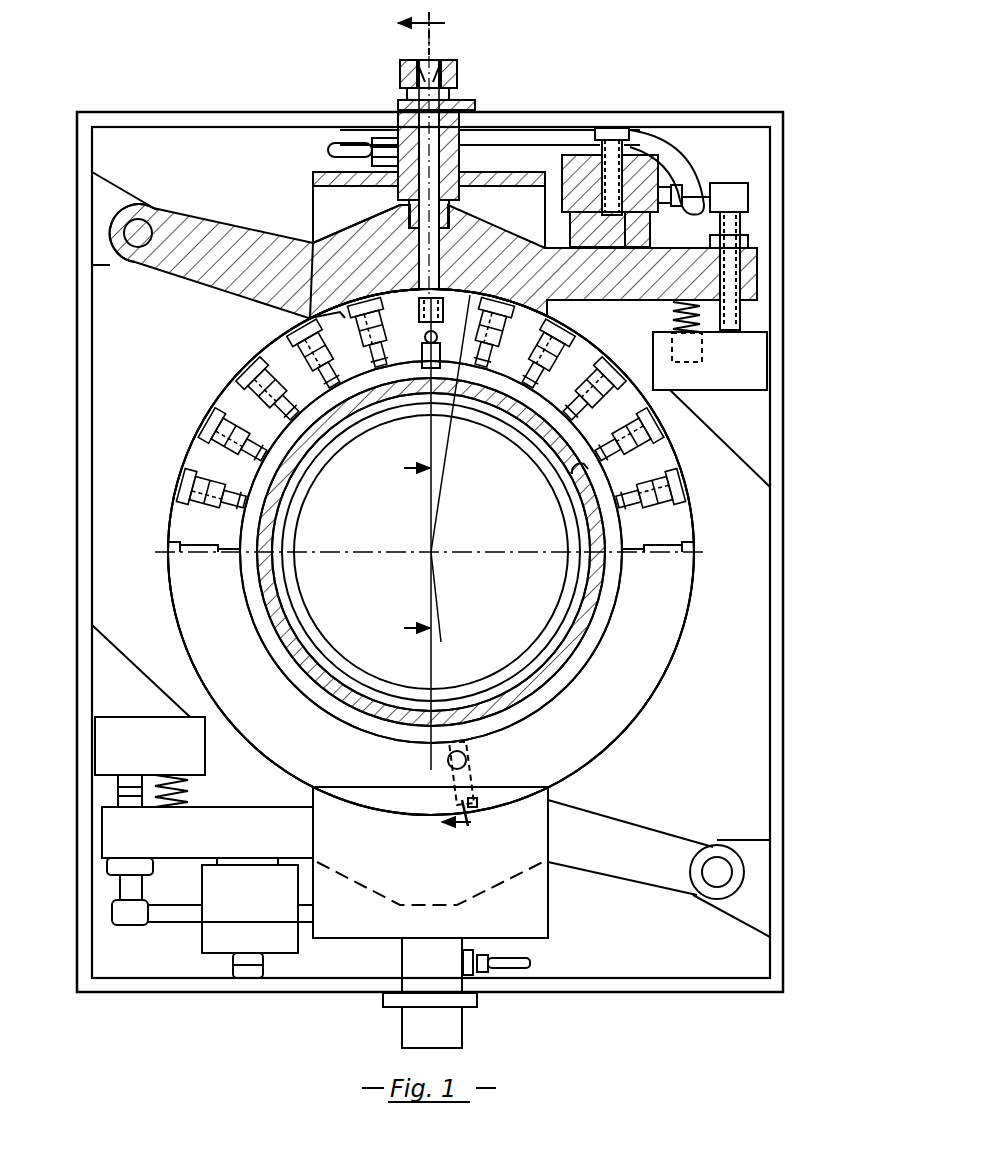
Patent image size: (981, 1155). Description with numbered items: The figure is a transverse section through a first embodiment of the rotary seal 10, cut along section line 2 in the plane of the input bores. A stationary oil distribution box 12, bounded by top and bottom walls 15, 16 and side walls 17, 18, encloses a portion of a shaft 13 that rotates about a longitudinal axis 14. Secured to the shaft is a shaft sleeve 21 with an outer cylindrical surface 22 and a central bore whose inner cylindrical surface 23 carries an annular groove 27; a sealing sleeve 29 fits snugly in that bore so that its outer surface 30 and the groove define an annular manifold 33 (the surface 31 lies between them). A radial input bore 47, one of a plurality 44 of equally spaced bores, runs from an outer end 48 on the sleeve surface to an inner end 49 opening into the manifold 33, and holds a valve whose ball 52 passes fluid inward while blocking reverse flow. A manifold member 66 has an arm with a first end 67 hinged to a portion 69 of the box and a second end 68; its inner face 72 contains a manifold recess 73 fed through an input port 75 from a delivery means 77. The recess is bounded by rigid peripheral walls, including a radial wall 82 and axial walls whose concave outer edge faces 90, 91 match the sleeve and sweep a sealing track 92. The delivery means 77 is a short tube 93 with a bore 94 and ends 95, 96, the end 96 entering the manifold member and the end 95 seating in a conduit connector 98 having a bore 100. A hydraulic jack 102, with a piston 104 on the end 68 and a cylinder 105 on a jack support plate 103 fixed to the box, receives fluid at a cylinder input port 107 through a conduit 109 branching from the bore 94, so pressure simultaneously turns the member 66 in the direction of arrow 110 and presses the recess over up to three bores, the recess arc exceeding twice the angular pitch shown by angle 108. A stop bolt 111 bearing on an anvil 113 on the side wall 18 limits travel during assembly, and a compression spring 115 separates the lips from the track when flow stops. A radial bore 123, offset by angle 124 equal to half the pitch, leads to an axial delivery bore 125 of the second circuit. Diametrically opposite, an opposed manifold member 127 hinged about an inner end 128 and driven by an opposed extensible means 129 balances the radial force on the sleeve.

The section line 2- 2 is at (445, 425).
The rotary seal 10 is at (580, 62).
The oil distribution box 12 is at (636, 108).
The shaft 13 is at (513, 606).
The longitudinal axis 14 is at (428, 555).
The top wall 15 is at (172, 103).
The bottom wall 16 is at (123, 993).
The side wall 17 is at (88, 593).
The side wall 18 is at (770, 779).
The shaft sleeve 21 is at (628, 734).
The outer cylindrical surface 22 is at (683, 652).
The inner cylindrical surface 23 is at (365, 400).
The annular groove 27 is at (262, 498).
The sealing sleeve 29 is at (300, 452).
The outer surface 30 is at (579, 471).
The outer surface of ring 31 is at (254, 525).
The annular manifold 33 is at (251, 547).
The plurality of input bores 44 is at (190, 490).
The input bore 47 is at (424, 334).
The outer end 48 is at (446, 297).
The inner end 49 is at (441, 349).
The ball 52 is at (438, 340).
The manifold member 66 is at (279, 223).
The first end 67 is at (153, 261).
The second end 68 is at (658, 302).
The portion of the box 69 is at (112, 197).
The inner face 72 is at (484, 300).
The manifold recess 73 is at (386, 298).
The input port 75 is at (413, 241).
The delivery means 77 is at (503, 94).
The radial wall 82 is at (415, 304).
The outer edge face 90 is at (345, 315).
The outer edge face 91 is at (512, 314).
The sealing track 92 is at (692, 514).
The tube 93 is at (456, 155).
The bore 94 is at (401, 188).
The end 95 is at (406, 100).
The end 96 is at (459, 197).
The conduit connector 98 is at (459, 68).
The bore 100 is at (438, 72).
The hydraulic jack 102 is at (681, 161).
The jack support plate 103 is at (566, 178).
The piston 104 is at (608, 250).
The cylinder 105 is at (668, 250).
The cylinder input port 107 is at (648, 207).
The angle 108 is at (447, 478).
The conduit 109 is at (532, 140).
The arrow 110 is at (735, 72).
The bolt 111 is at (728, 268).
The anvil 113 is at (752, 366).
The compression spring 115 is at (672, 320).
The radial bore 123 is at (478, 756).
The angle 124 is at (445, 628).
The axial delivery bore 125 is at (470, 768).
The opposed manifold member 127 is at (565, 879).
The inner end 128 is at (727, 823).
The opposed extensible means 129 is at (193, 922).